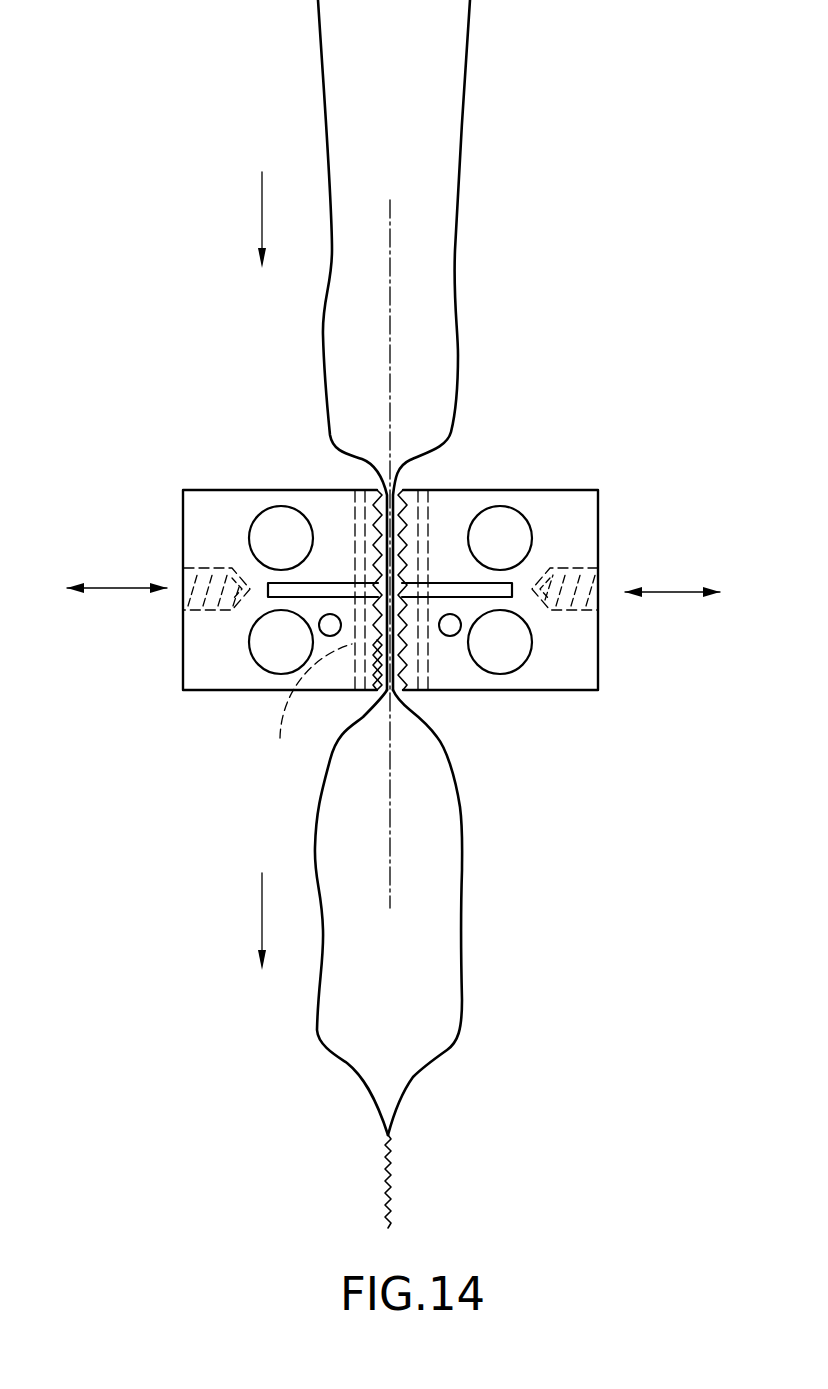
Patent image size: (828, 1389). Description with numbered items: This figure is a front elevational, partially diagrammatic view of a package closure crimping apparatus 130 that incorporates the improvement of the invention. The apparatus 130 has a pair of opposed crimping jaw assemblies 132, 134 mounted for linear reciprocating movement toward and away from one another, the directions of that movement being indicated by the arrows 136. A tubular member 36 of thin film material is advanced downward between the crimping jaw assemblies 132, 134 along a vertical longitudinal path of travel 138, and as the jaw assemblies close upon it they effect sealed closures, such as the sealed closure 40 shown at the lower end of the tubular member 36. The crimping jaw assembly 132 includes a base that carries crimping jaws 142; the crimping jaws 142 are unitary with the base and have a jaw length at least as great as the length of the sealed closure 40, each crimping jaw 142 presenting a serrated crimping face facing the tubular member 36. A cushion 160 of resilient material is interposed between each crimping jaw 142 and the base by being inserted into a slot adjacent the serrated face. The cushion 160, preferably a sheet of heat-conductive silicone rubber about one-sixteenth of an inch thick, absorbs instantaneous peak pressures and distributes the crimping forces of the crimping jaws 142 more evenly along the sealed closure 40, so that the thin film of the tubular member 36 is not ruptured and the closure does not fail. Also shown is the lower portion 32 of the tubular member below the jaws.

The lower body portion 32 is at (468, 946).
The tubular member 36 is at (464, 138).
The sealed closure 40 is at (393, 1180).
The package closure crimping apparatus 130 is at (393, 594).
The crimping jaw assembly 132 is at (242, 494).
The crimping jaw assembly 134 is at (556, 688).
The arrows 136 is at (118, 588).
The vertical longitudinal path of travel 138 is at (390, 342).
The crimping jaws 142 is at (375, 688).
The cushion 160 is at (308, 703).